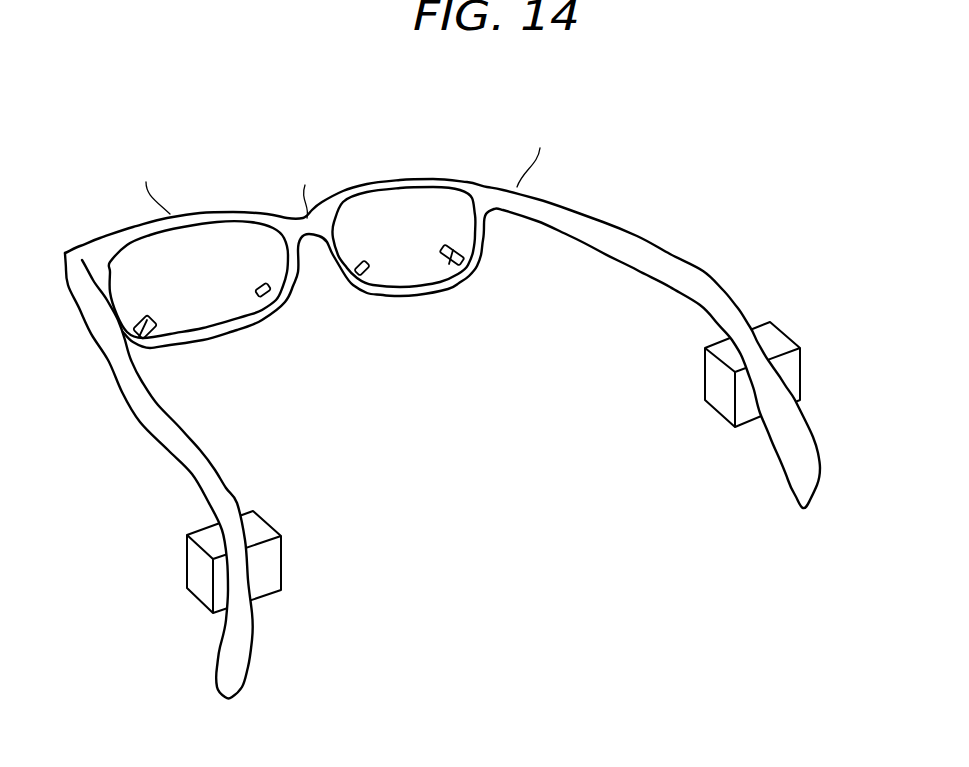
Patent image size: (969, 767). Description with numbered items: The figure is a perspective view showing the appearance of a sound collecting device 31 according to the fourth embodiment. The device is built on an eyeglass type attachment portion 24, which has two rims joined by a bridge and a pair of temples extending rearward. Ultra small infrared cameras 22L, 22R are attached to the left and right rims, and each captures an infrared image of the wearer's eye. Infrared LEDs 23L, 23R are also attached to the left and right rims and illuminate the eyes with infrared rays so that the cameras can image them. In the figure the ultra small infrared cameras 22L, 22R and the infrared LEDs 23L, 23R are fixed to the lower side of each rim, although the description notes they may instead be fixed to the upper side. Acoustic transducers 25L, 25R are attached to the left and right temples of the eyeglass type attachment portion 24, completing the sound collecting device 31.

The sound collecting device 31 is at (623, 147).
The eyeglass type attachment portion 24 is at (598, 220).
The ultra small infrared camera 22R is at (156, 330).
The ultra small infrared camera 22L is at (449, 264).
The infrared LED 23R is at (263, 283).
The infrared LED 23L is at (368, 265).
The acoustic transducer 25R is at (186, 563).
The acoustic transducer 25L is at (787, 335).